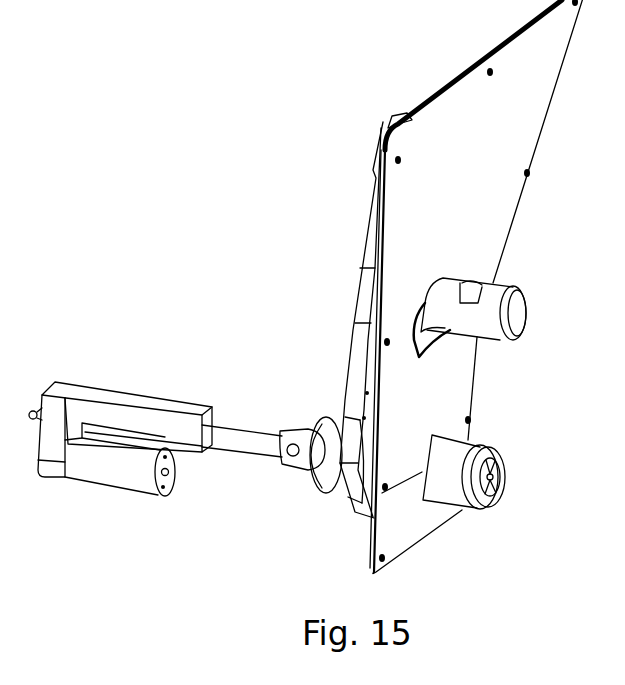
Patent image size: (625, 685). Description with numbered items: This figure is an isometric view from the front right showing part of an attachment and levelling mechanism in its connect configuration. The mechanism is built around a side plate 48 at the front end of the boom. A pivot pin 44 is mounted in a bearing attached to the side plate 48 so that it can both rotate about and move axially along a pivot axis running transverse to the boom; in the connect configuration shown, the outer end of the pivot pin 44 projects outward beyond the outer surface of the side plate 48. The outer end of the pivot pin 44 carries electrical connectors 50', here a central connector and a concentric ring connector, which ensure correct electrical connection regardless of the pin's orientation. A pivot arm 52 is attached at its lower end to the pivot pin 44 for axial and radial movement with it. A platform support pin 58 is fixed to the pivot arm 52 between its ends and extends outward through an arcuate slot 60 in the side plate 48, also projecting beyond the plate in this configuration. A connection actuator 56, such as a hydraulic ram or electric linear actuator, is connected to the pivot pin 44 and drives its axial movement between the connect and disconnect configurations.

The side plate 48 is at (533, 122).
The pivot arm 52 is at (357, 352).
The connection actuator 56 is at (138, 398).
The platform support pin 58 is at (518, 315).
The arcuate slot 60 is at (425, 310).
The pivot pin 44 is at (445, 492).
The electrical connectors 50' is at (530, 495).